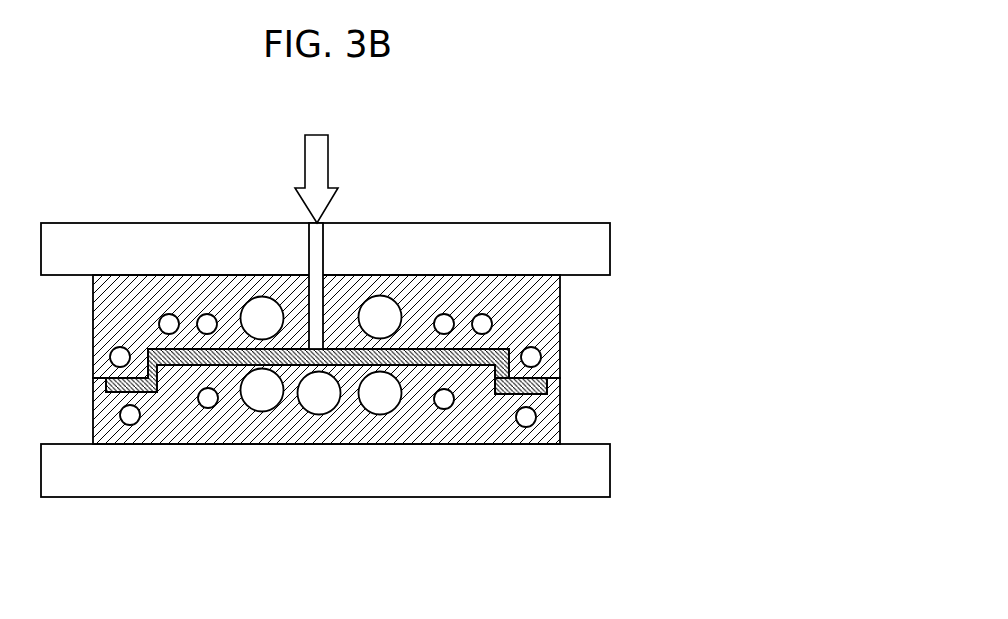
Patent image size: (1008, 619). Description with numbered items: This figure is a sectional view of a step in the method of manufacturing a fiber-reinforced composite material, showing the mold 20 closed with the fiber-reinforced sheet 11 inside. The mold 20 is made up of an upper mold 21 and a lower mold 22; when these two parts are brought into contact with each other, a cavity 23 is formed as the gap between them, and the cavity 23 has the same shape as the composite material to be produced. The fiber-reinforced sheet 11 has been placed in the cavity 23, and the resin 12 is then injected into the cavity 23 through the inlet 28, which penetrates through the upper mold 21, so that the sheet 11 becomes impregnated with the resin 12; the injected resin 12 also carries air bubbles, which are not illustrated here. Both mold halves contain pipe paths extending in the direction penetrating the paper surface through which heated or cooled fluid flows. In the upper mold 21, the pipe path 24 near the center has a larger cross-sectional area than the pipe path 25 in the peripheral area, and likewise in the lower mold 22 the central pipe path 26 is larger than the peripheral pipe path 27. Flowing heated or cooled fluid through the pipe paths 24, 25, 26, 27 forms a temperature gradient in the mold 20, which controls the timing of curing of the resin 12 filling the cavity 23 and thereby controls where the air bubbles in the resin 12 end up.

The fiber-reinforced sheet 11 is at (547, 388).
The resin 12 is at (317, 134).
The mold 20 is at (630, 192).
The upper mold 21 is at (561, 300).
The lower mold 22 is at (560, 437).
The cavity 23 is at (560, 408).
The pipe path 24 is at (381, 295).
The pipe path 25 is at (445, 314).
The pipe path 26 is at (380, 415).
The pipe path 27 is at (444, 409).
The inlet 28 is at (309, 250).